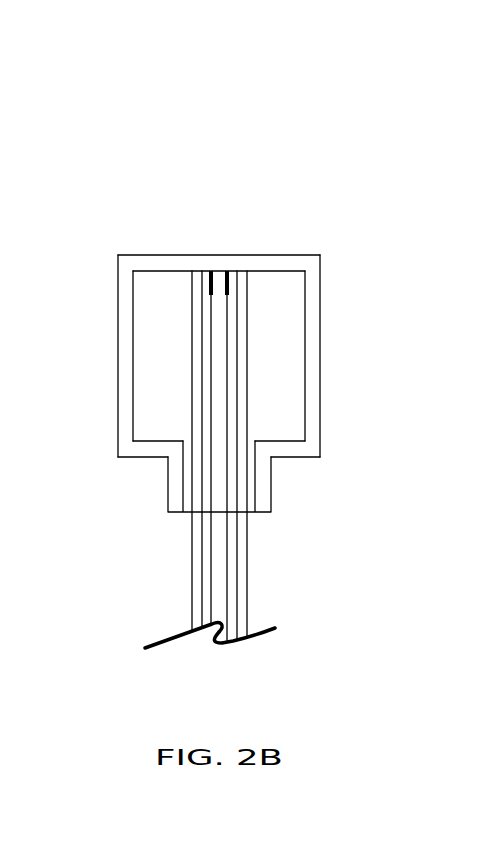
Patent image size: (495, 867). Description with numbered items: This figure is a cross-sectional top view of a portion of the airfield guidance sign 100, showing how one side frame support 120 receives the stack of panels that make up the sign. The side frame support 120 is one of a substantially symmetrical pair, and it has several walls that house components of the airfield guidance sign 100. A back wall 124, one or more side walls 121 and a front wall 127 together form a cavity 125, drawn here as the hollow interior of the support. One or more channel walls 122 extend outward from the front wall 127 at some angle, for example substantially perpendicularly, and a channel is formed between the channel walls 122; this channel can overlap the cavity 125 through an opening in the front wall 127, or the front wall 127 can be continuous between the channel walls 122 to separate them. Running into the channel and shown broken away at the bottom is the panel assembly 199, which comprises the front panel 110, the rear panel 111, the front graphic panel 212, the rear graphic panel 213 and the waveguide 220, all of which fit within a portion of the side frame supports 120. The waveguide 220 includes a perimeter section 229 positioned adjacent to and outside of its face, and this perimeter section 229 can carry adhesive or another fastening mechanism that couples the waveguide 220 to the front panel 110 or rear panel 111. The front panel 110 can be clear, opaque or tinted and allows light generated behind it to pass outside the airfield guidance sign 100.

The airfield guidance sign 100 is at (335, 110).
The side frame support 120 is at (321, 233).
The back wall 124 is at (168, 255).
The side wall 121 is at (117, 345).
The cavity 125 is at (157, 398).
The front wall 127 is at (128, 458).
The channel wall 122 is at (167, 488).
The probe tube assembly 199 is at (162, 553).
The perimeter section 229 is at (240, 272).
The front panel 110 is at (191, 597).
The rear panel 111 is at (243, 611).
The waveguide 220 is at (220, 612).
The front graphic panel 212 is at (201, 616).
The rear graphic panel 213 is at (231, 633).